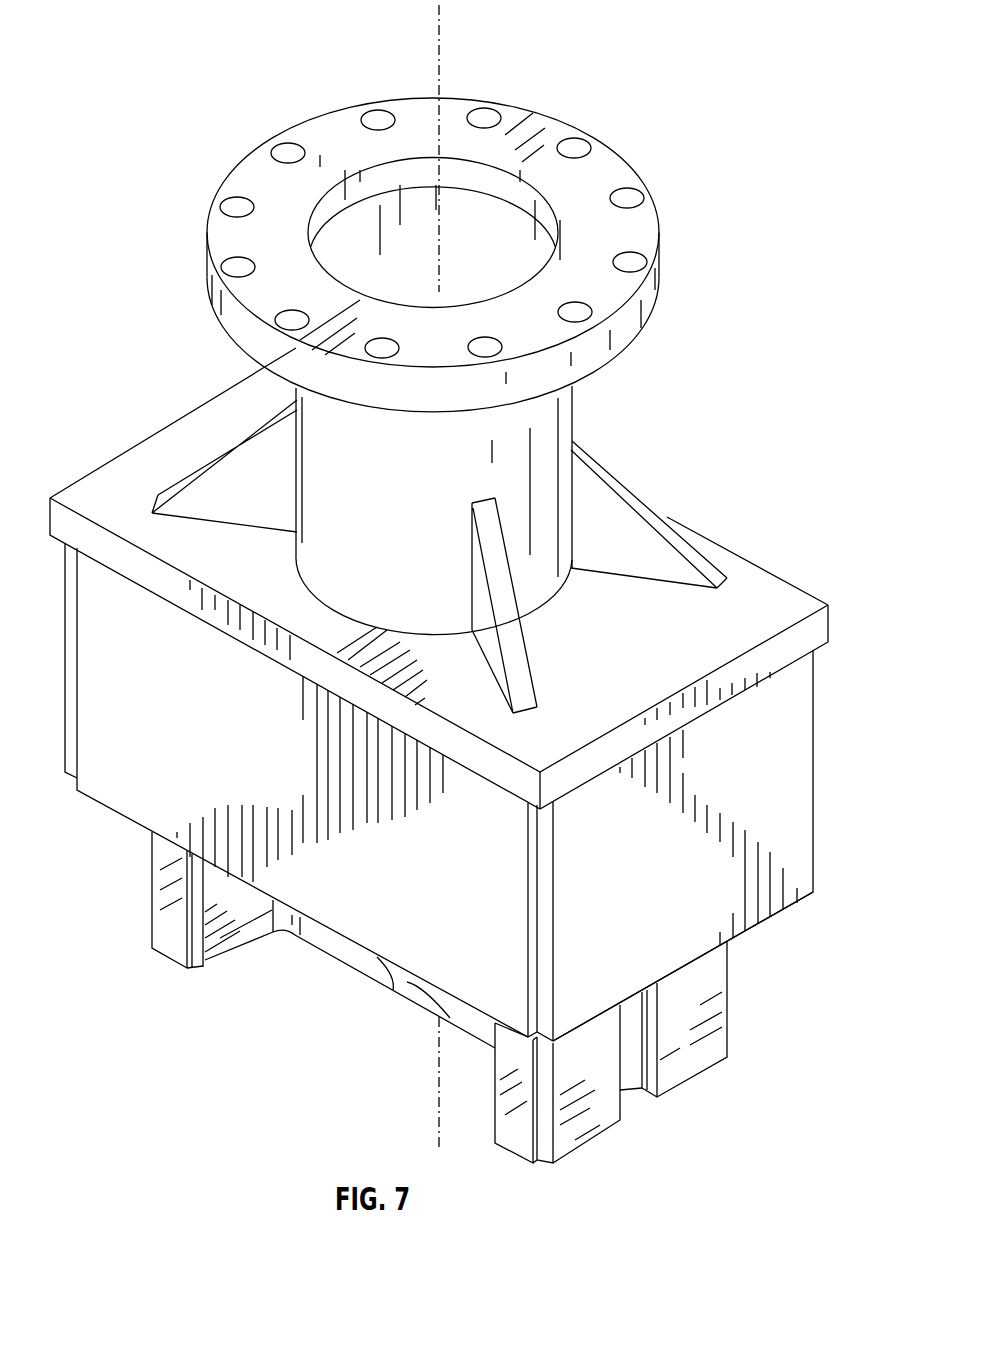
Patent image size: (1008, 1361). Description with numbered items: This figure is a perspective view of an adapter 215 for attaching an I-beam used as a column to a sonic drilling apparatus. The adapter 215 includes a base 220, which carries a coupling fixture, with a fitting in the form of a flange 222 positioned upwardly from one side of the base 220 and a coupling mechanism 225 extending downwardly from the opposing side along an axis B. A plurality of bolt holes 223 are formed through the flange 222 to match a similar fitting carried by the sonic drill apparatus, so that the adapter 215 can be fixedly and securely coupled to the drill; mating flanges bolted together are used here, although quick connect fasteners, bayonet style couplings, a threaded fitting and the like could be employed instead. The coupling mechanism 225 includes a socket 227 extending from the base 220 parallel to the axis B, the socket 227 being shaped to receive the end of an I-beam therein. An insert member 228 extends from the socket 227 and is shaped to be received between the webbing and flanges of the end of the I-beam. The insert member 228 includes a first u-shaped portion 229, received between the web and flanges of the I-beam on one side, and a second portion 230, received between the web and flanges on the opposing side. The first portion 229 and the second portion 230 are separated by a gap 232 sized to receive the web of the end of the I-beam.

The axis B is at (442, 67).
The adapter 215 is at (825, 391).
The base 220 is at (790, 591).
The flange 222 is at (608, 165).
The bolt holes 223 is at (630, 198).
The coupling mechanism 225 is at (816, 826).
The socket 227 is at (787, 908).
The insert member 228 is at (728, 997).
The first u-shaped portion 229 is at (722, 1062).
The second portion 230 is at (579, 1148).
The gap 232 is at (627, 1092).